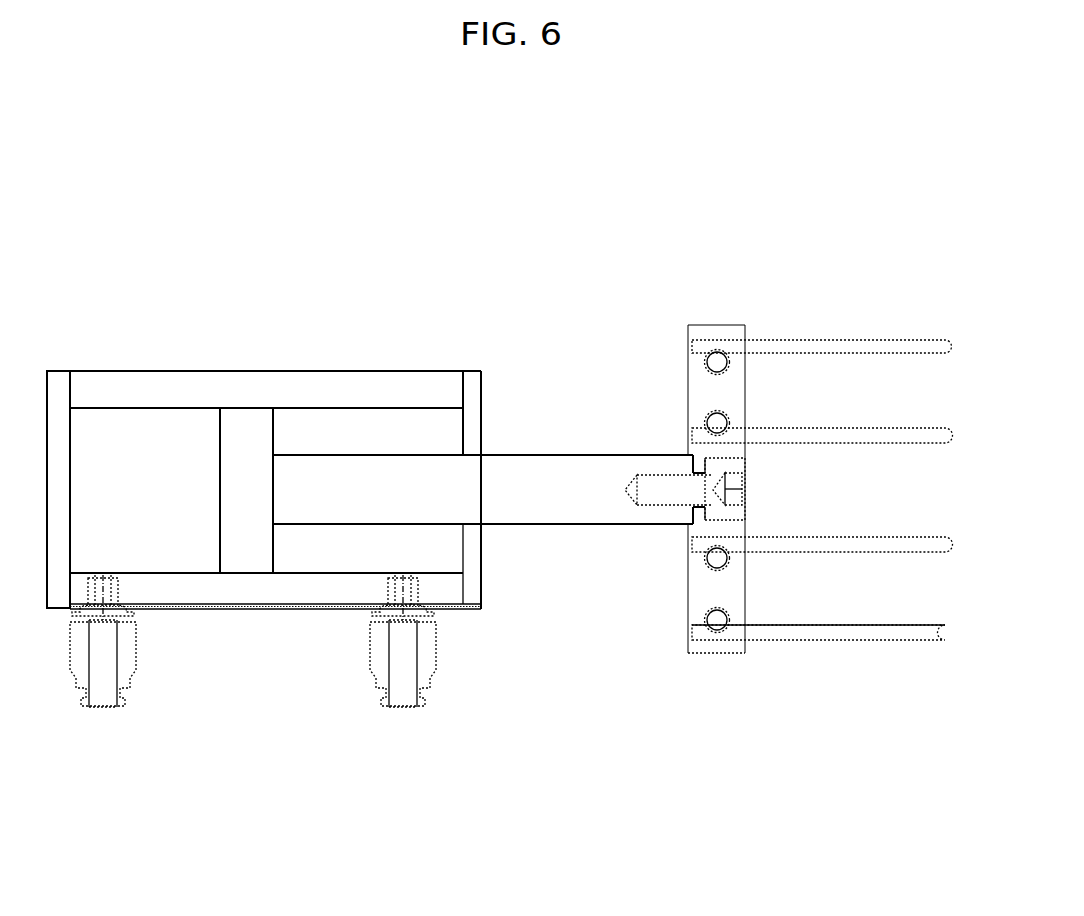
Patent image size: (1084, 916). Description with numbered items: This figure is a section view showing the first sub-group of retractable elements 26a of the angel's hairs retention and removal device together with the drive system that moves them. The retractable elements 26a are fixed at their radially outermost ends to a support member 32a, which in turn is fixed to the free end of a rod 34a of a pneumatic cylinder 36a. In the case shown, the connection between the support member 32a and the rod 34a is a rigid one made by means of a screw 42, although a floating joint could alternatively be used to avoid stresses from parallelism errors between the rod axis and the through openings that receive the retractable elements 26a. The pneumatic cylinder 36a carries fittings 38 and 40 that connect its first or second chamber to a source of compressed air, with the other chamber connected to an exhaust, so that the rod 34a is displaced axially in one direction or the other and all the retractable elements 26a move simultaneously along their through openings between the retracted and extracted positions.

The retractable elements 26a is at (813, 340).
The support member 32a is at (712, 648).
The rod 34a is at (533, 455).
The pneumatic cylinder 36a is at (255, 371).
The fitting 38 is at (405, 708).
The fitting 40 is at (103, 708).
The screw 42 is at (738, 512).